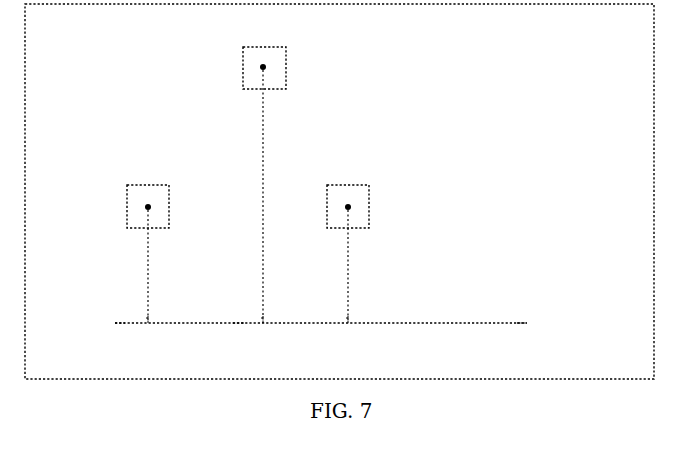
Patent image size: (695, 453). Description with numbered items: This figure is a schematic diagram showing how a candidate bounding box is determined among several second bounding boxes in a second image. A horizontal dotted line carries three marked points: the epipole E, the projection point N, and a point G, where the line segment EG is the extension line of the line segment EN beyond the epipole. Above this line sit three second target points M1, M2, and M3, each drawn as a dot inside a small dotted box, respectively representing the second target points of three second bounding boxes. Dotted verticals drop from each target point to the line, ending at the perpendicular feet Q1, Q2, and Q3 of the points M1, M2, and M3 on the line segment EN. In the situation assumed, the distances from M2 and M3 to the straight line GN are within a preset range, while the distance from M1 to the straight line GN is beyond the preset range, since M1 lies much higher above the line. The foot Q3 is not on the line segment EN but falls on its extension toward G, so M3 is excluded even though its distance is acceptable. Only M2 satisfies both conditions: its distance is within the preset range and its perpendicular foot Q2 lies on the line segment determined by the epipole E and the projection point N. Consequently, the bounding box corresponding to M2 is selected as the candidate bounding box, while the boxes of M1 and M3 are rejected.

The second target point M1 is at (284, 185).
The second target point M2 is at (368, 254).
The second target point M3 is at (169, 254).
The perpendicular foot Q1 is at (275, 312).
The perpendicular foot Q2 is at (365, 312).
The perpendicular foot Q3 is at (160, 312).
The extension line end point G is at (119, 337).
The epipole E is at (239, 337).
The projection point N is at (527, 337).